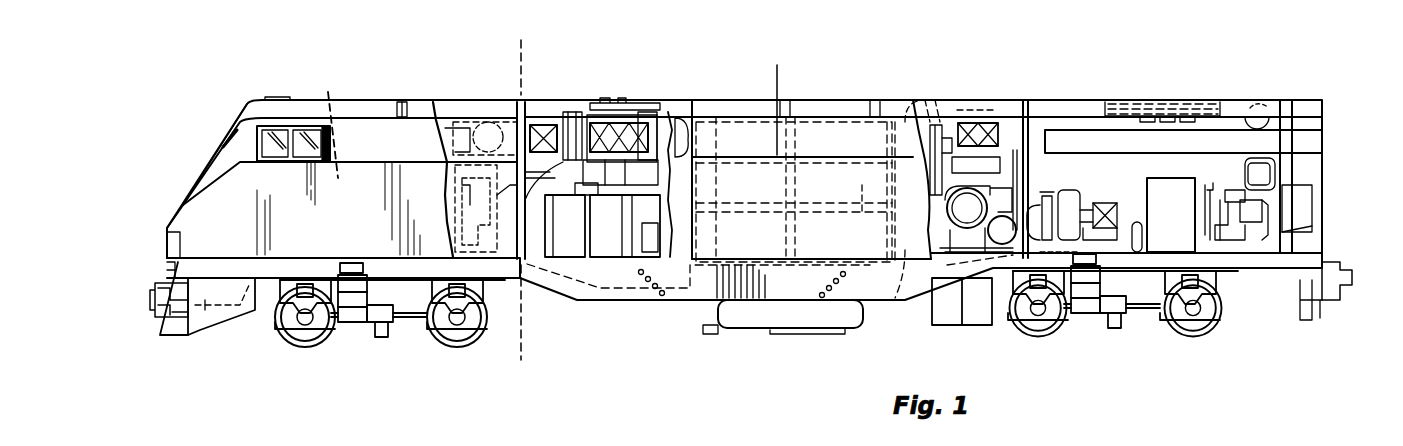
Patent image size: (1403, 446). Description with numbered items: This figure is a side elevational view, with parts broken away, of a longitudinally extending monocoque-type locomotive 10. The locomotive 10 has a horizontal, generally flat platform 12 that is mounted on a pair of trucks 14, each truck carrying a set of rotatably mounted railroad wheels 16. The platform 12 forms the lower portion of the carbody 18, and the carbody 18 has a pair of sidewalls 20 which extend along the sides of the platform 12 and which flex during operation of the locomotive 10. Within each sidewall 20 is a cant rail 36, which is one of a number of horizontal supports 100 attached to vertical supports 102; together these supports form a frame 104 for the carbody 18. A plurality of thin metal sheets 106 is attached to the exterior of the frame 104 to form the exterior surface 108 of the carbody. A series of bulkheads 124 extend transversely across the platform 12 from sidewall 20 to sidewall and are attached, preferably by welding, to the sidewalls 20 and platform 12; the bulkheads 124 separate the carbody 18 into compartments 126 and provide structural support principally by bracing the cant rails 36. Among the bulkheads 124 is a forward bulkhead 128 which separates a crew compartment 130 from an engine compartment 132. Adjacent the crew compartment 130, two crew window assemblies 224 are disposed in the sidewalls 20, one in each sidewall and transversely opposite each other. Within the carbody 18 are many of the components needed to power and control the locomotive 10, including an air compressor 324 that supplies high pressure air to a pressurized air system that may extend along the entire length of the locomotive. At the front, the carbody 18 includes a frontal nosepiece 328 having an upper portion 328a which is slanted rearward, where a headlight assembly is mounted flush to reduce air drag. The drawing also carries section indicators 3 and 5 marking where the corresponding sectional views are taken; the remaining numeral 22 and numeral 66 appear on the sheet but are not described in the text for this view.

The locomotive 10 is at (675, 62).
The platform 12 is at (600, 296).
The trucks 14 is at (372, 336).
The railroad wheels 16 is at (457, 347).
The carbody 18 is at (850, 100).
The sidewalls 20 is at (748, 254).
The roof 22 is at (736, 100).
The cant rail 36 is at (718, 118).
The partition 66 is at (818, 117).
The horizontal supports 100 is at (908, 100).
The vertical supports 102 is at (893, 300).
The frame 104 is at (862, 212).
The thin metal sheets 106 is at (706, 262).
The exterior surface 108 is at (362, 183).
The bulkheads 124 is at (517, 98).
The compartments 126 is at (1040, 140).
The forward bulkhead 128 is at (537, 128).
The crew compartment 130 is at (323, 118).
The engine compartment 132 is at (670, 160).
The crew window assemblies 224 is at (285, 125).
The air compressor 324 is at (1255, 205).
The frontal nosepiece 328 is at (163, 251).
The upper portion 328a is at (170, 222).
The section line 3- 3 is at (808, 140).
The section line 5- 5 is at (496, 357).